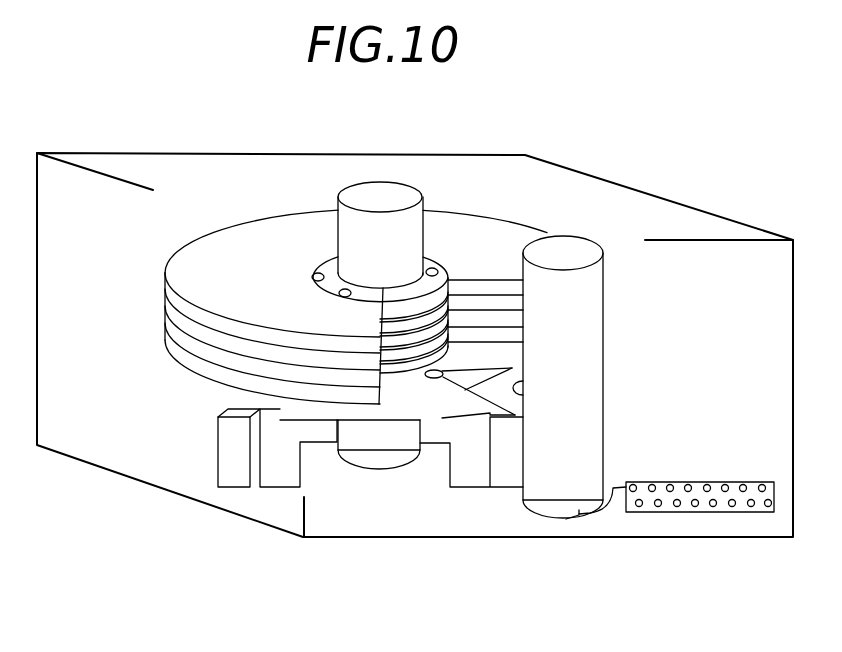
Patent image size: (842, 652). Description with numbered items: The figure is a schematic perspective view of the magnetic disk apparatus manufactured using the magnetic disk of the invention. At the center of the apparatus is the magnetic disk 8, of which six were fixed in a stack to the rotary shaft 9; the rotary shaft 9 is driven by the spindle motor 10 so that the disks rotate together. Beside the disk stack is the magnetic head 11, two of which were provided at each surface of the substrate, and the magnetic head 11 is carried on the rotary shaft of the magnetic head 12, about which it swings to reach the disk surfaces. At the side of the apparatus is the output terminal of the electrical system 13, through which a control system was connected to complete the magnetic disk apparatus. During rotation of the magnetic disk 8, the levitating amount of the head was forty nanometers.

The magnetic disk 8 is at (231, 268).
The rotary shaft 9 is at (383, 192).
The spindle motor 10 is at (270, 472).
The magnetic head 11 is at (436, 378).
The rotary shaft of the magnetic head 12 is at (543, 493).
The output terminal of the electrical system 13 is at (686, 502).